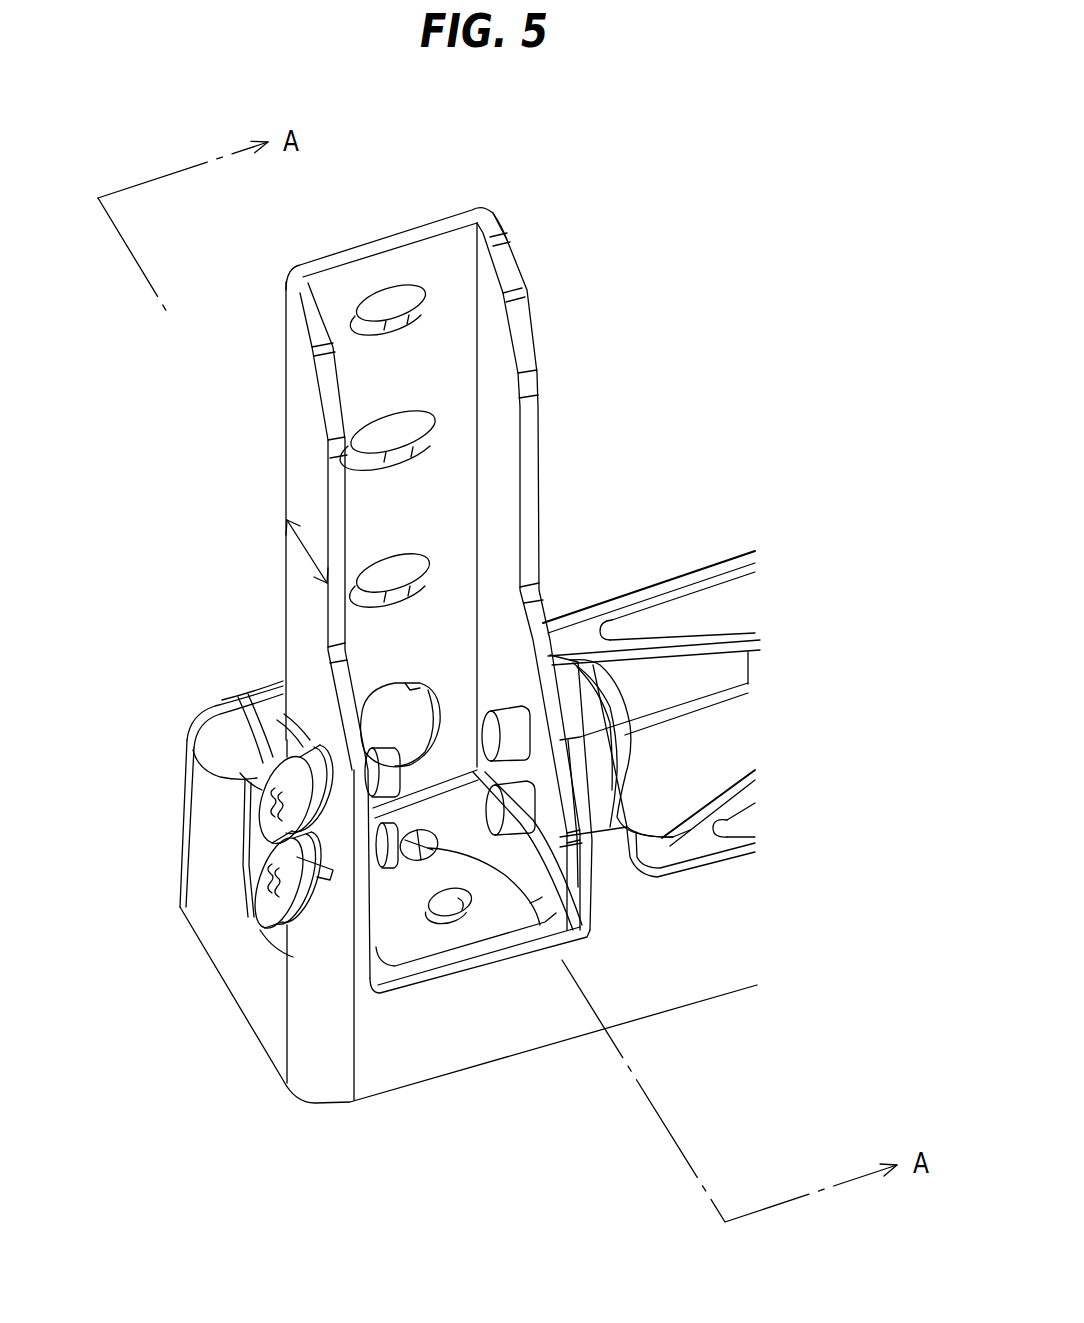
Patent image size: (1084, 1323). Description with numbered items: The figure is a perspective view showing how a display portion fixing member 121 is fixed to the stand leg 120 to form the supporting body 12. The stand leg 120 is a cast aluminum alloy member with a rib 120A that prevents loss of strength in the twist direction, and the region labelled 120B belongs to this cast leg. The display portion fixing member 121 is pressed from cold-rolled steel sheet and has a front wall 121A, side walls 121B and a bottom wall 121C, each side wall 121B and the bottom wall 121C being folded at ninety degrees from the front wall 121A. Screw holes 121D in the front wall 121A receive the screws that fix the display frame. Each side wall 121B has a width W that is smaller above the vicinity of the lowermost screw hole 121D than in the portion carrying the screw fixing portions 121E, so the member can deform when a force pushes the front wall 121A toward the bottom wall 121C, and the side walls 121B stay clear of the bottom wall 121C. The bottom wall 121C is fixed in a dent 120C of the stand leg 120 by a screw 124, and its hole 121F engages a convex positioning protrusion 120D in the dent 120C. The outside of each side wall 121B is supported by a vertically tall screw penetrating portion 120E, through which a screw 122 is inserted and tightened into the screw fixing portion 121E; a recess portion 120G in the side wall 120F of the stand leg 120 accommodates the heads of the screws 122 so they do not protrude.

The supporting body 12 is at (624, 430).
The stand leg 120 is at (707, 573).
The rib 120A is at (730, 653).
The upper wall portion 120B is at (262, 685).
The dent 120C is at (387, 977).
The convex positioning protrusion 120D is at (463, 907).
The screw penetrating portion 120E is at (560, 668).
The side wall 120F is at (207, 923).
The recess portion 120G is at (263, 896).
The display portion fixing member 121 is at (387, 243).
The front wall 121A is at (450, 247).
The side wall 121B is at (508, 257).
The bottom wall 121C is at (578, 910).
The screw hole 121D is at (360, 303).
The screw fixing portion 121E is at (490, 707).
The hole 121F is at (453, 907).
The screw 122 is at (262, 757).
The screw 124 is at (530, 905).
The width W is at (307, 552).